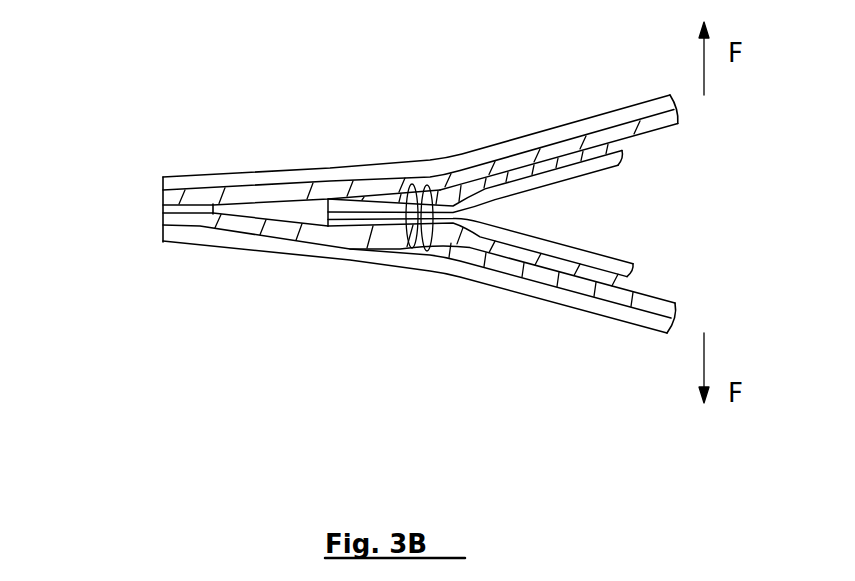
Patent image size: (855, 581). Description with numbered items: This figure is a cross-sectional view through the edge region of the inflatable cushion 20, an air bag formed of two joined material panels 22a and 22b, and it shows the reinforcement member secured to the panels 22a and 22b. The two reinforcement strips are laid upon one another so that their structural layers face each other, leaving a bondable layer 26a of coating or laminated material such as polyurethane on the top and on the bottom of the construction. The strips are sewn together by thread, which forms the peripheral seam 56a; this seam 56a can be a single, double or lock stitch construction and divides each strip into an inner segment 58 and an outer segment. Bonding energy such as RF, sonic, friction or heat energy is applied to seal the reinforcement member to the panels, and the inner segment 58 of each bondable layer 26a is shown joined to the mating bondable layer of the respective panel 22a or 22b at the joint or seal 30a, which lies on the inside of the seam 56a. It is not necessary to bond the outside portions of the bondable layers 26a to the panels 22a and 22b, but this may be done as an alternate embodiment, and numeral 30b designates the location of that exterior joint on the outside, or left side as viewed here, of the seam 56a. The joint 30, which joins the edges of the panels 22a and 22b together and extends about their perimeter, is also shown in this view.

The inflatable cushion 20 is at (102, 46).
The material panel 22a is at (578, 133).
The material panel 22b is at (568, 306).
The bondable layer 26a is at (614, 150).
The joint 30 is at (272, 207).
The joint 30a is at (487, 193).
The exterior joint 30b is at (338, 190).
The peripheral seam 56a is at (412, 188).
The inner segment 58 is at (594, 172).